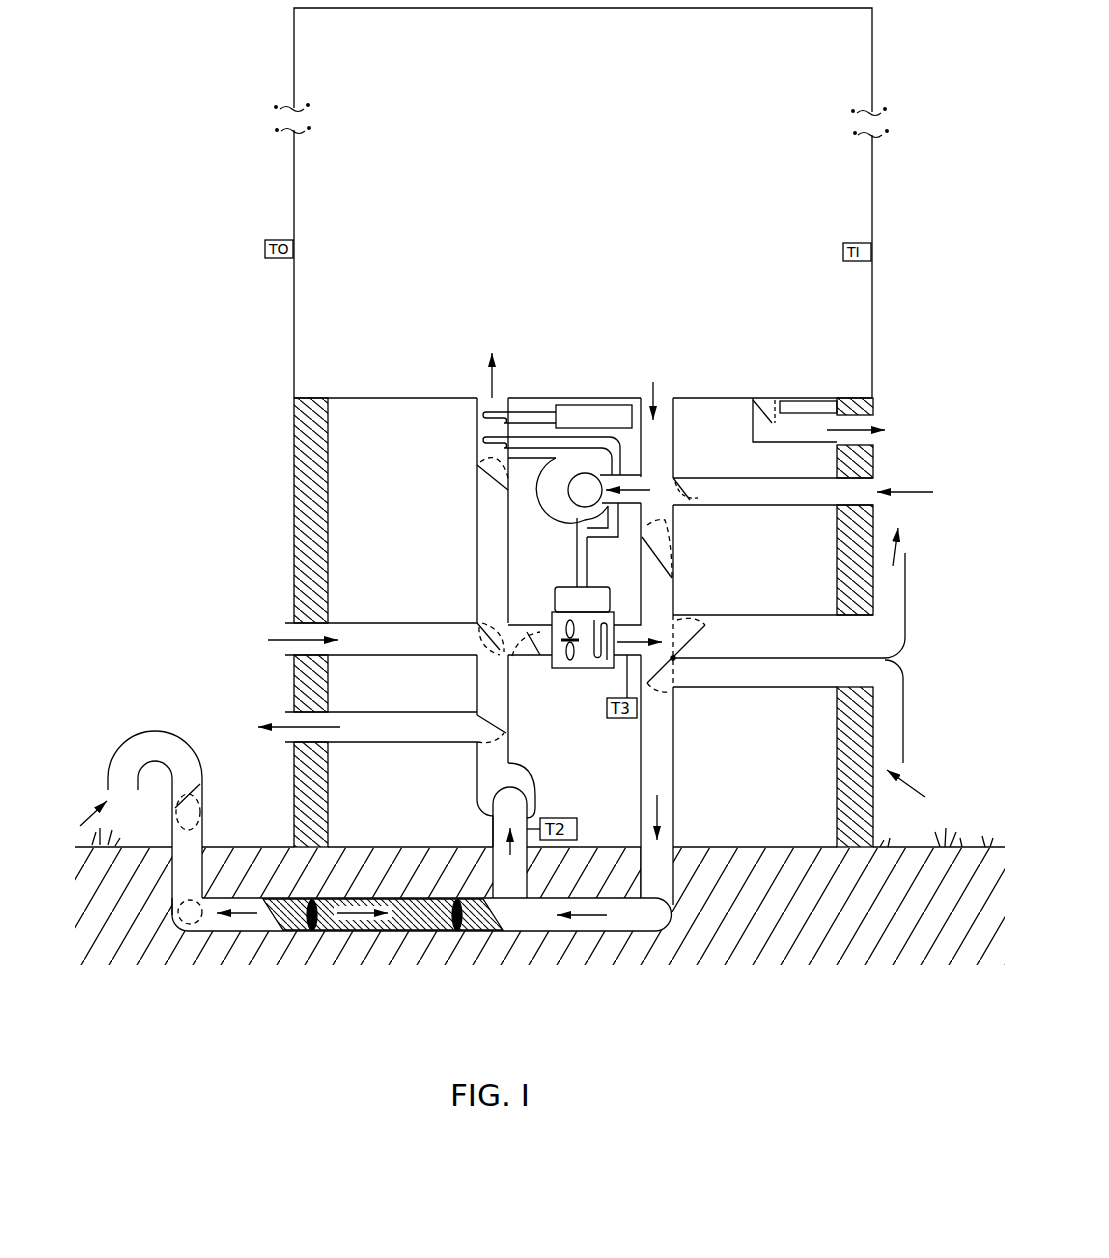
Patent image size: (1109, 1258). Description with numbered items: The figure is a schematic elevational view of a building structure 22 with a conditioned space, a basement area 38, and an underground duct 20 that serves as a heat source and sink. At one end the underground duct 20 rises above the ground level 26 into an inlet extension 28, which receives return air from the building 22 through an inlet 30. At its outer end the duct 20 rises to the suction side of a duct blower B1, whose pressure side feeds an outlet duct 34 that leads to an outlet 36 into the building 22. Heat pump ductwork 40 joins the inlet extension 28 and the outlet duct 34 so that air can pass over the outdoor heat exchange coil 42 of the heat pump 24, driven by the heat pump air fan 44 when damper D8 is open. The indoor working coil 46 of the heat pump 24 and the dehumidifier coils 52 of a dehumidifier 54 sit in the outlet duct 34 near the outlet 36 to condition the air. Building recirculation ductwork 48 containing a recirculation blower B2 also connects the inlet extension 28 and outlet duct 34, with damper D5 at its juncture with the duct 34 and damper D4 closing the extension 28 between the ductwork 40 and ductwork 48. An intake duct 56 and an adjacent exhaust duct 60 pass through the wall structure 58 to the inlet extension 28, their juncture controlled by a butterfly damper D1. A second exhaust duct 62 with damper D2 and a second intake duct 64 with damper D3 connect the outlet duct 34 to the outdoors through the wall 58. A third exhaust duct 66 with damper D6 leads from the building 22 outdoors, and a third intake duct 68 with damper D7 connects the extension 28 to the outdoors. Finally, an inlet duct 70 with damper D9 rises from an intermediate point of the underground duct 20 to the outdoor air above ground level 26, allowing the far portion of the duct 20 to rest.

The underground duct 20 is at (410, 898).
The building structure 22 is at (294, 70).
The heat pump 24 is at (555, 600).
The ground level 26 is at (266, 846).
The inlet extension 28 is at (675, 463).
The inlet 30 is at (662, 396).
The outlet duct 34 is at (477, 462).
The outlet 36 is at (497, 396).
The basement area 38 is at (724, 767).
The heat pump ductwork 40 is at (580, 668).
The outdoor heat exchange coil 42 is at (625, 622).
The heat pump air fan 44 is at (600, 665).
The indoor working coil 46 is at (480, 447).
The building recirculation ductwork 48 is at (630, 472).
The dehumidifier coils 52 is at (480, 418).
The dehumidifier 54 is at (593, 405).
The intake duct 56 is at (820, 688).
The wall structure 58 is at (294, 803).
The exhaust duct 60 is at (832, 592).
The second exhaust duct 62 is at (292, 705).
The second intake duct 64 is at (292, 615).
The third exhaust duct 66 is at (873, 412).
The third intake duct 68 is at (873, 478).
The inlet duct 70 is at (160, 731).
The duct blower B1 is at (532, 775).
The building recirculation blower B2 is at (562, 505).
The butterfly damper D1 is at (690, 644).
The damper D2 is at (480, 722).
The damper D3 is at (492, 639).
The damper D4 is at (657, 563).
The damper D5 is at (492, 490).
The damper D6 is at (784, 380).
The damper D7 is at (695, 490).
The damper D8 is at (526, 659).
The damper D9 is at (174, 806).